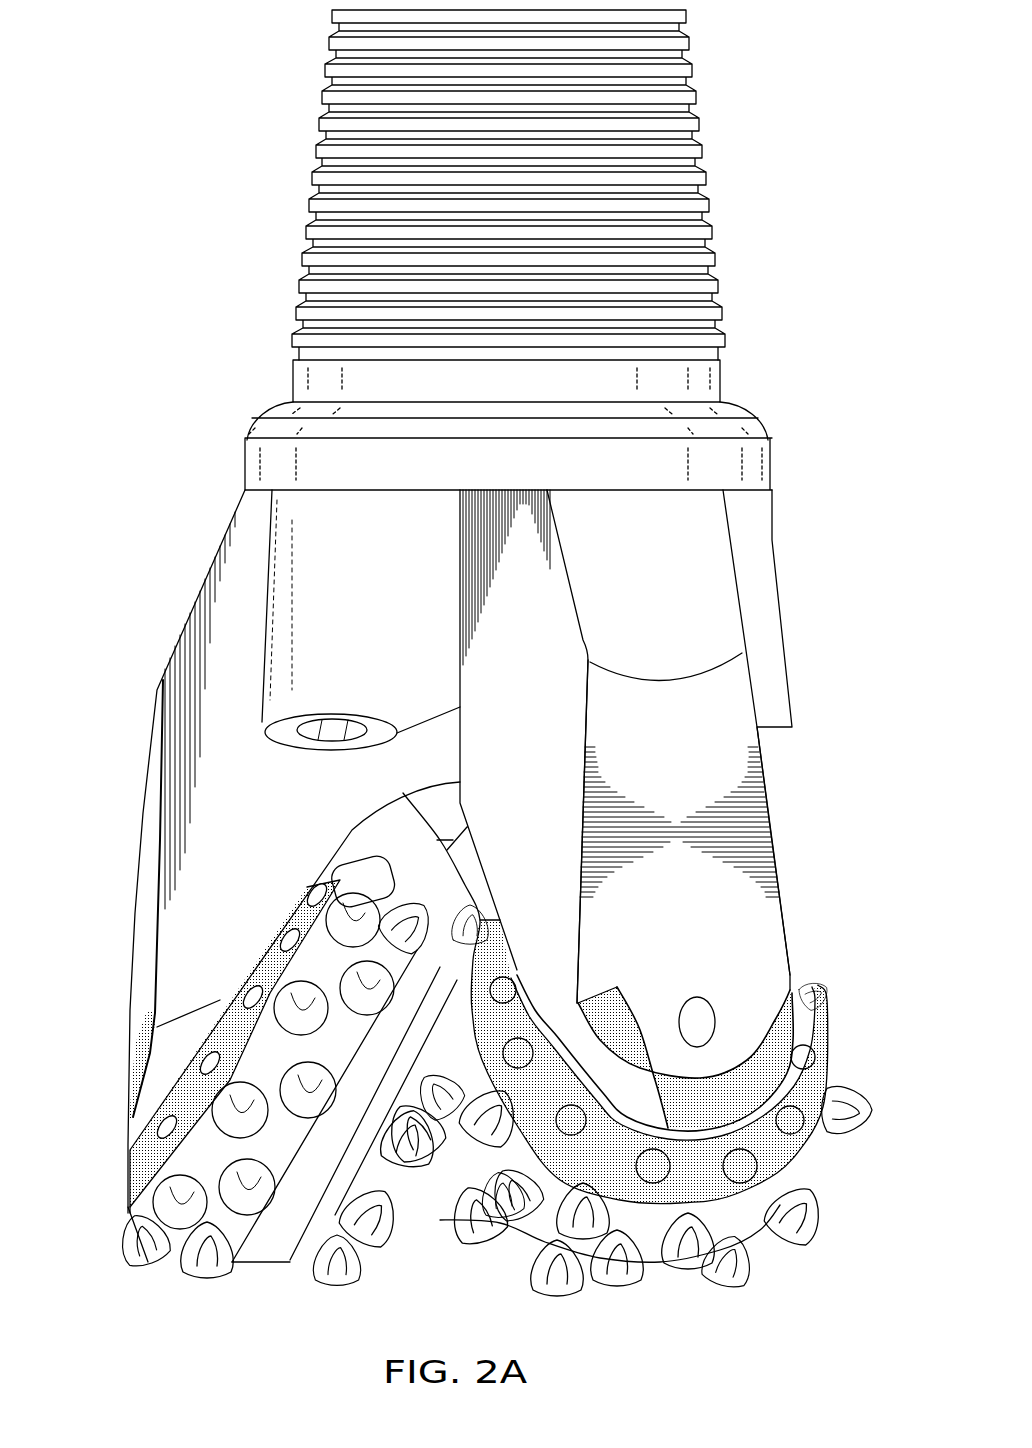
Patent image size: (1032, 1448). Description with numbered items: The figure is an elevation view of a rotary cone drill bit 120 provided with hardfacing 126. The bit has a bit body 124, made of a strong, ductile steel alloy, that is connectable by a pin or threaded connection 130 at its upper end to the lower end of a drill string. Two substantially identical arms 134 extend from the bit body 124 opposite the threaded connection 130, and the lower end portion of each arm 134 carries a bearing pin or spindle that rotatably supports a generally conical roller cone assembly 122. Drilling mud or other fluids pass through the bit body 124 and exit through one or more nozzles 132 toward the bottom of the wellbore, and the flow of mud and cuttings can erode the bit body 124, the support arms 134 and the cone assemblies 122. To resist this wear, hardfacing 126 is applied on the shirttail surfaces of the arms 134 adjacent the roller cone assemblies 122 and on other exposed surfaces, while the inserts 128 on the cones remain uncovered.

The rotary cone drill bit 120 is at (207, 572).
The roller cone assembly 122 is at (247, 1232).
The bit body 124 is at (262, 628).
The hardfacing 126 is at (267, 963).
The inserts 128 is at (197, 1268).
The threaded connection 130 is at (690, 100).
The nozzles 132 is at (283, 735).
The arms 134 is at (777, 942).